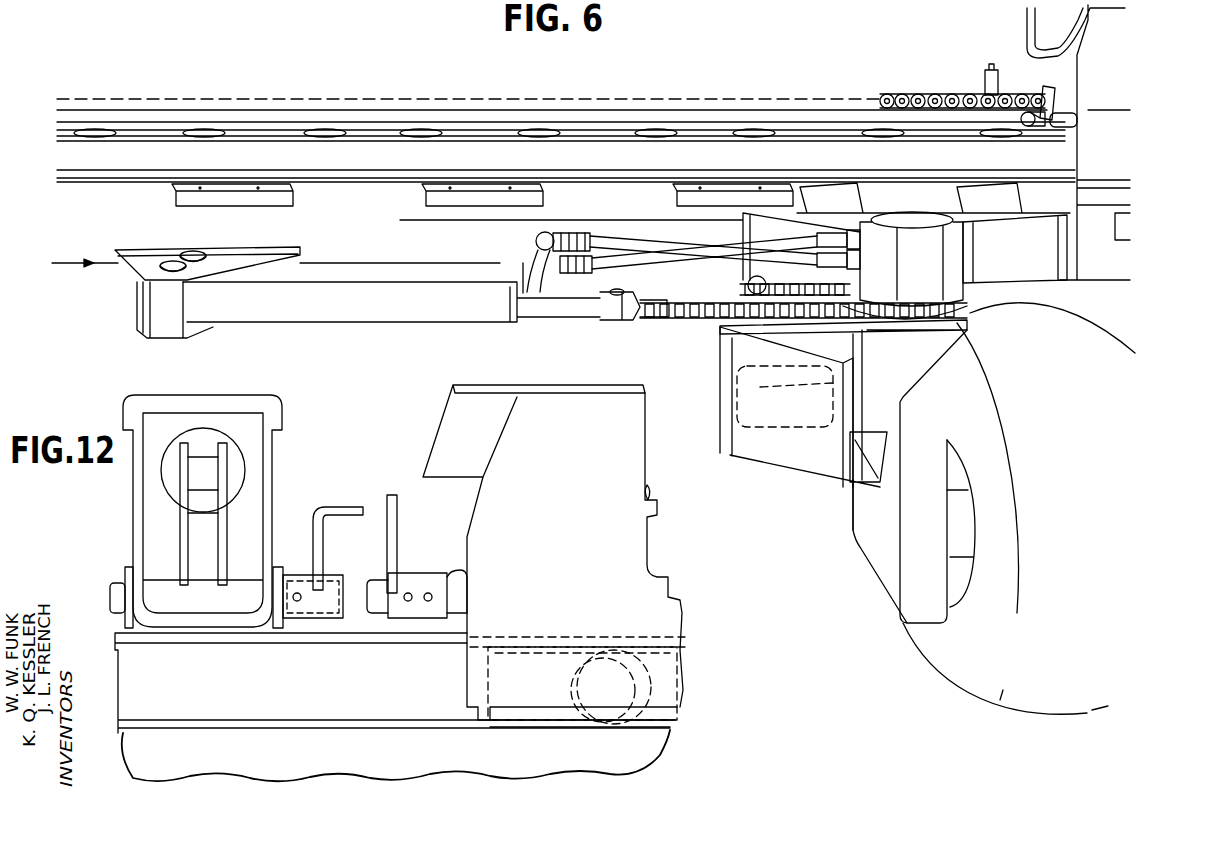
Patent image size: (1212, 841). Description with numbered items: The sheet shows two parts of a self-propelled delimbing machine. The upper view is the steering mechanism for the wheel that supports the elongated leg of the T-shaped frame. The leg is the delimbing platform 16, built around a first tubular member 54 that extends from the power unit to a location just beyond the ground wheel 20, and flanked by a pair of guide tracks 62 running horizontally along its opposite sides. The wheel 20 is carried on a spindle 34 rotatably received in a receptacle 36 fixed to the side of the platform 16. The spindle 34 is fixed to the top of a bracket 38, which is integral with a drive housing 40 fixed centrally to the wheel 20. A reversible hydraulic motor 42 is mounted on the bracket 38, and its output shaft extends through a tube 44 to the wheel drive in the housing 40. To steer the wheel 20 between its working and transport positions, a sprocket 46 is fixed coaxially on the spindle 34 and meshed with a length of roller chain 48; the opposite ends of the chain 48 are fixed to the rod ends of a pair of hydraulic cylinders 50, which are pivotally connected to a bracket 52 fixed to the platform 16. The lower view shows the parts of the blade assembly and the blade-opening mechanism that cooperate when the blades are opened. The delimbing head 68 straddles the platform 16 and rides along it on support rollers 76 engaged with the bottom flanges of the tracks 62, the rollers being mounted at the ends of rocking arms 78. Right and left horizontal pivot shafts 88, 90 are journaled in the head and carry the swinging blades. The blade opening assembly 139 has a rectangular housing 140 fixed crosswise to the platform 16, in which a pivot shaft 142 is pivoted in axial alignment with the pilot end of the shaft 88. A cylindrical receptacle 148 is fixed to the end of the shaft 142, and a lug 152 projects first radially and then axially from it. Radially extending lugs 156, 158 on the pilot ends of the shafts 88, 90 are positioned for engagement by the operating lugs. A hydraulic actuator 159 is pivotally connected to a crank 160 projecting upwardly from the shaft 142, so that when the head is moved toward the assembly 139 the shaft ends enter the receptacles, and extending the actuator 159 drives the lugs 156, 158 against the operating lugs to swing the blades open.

In FIG. 6, the delimbing platform 16 is at (85, 280).
In FIG. 6, the ground wheel 20 is at (1102, 334).
In FIG. 6, the spindle 34 is at (915, 217).
In FIG. 6, the receptacle 36 is at (955, 267).
In FIG. 6, the bracket 38 is at (910, 361).
In FIG. 6, the drive housing 40 is at (870, 540).
In FIG. 6, the reversible hydraulic motor 42 is at (787, 433).
In FIG. 6, the tube 44 is at (850, 400).
In FIG. 6, the sprocket 46 is at (857, 298).
In FIG. 6, the roller chain 48 is at (706, 320).
In FIG. 6, the hydraulic cylinders 50 is at (310, 278).
In FIG. 6, the bracket 52 is at (148, 257).
In FIG. 6, the first tubular member 54 is at (366, 208).
In FIG. 6, the guide tracks 62 is at (608, 165).
In FIG. 12, the guide tracks 62 is at (285, 715).
In FIG. 6, the delimbing head 68 is at (1019, 56).
In FIG. 12, the delimbing head 68 is at (650, 538).
In FIG. 12, the support rollers 76 is at (648, 652).
In FIG. 12, the arms 78 is at (577, 687).
In FIG. 6, the right pivot shaft 88 is at (1033, 124).
In FIG. 12, the right pivot shaft 88 is at (460, 598).
In FIG. 6, the left pivot shaft 90 is at (976, 87).
In FIG. 12, the blade opening assembly 139 is at (309, 415).
In FIG. 12, the rectangular housing 140 is at (270, 455).
In FIG. 12, the pivot shaft 142 is at (118, 583).
In FIG. 12, the cylindrical receptacle 148 is at (293, 575).
In FIG. 12, the lug 152 is at (337, 506).
In FIG. 6, the lug 156 is at (1063, 82).
In FIG. 12, the lug 156 is at (396, 513).
In FIG. 6, the lug 158 is at (986, 72).
In FIG. 12, the hydraulic actuator 159 is at (210, 438).
In FIG. 12, the crank 160 is at (227, 538).